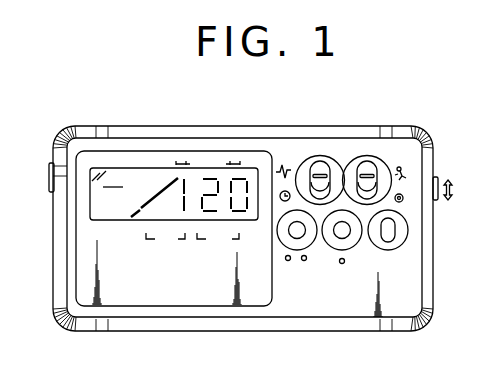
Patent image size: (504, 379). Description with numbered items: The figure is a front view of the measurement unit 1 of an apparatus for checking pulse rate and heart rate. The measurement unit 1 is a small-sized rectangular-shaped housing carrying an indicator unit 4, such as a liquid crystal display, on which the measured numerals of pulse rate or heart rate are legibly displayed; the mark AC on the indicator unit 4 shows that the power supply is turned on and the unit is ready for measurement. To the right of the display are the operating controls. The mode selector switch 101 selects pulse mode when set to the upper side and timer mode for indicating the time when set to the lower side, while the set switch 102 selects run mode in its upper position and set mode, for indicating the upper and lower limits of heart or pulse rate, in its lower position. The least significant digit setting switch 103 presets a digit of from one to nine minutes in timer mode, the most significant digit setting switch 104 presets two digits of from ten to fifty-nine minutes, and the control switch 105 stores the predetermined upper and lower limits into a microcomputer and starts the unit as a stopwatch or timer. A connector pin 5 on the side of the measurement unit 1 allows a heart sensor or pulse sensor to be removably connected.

The measurement unit 1 is at (313, 127).
The indicator unit 4 is at (150, 178).
The connector pin 5 is at (50, 177).
The mode selector switch 101 is at (325, 157).
The set switch 102 is at (370, 157).
The least significant digit setting switch 103 is at (335, 247).
The most significant digit setting switch 104 is at (284, 245).
The control switch 105 is at (406, 240).